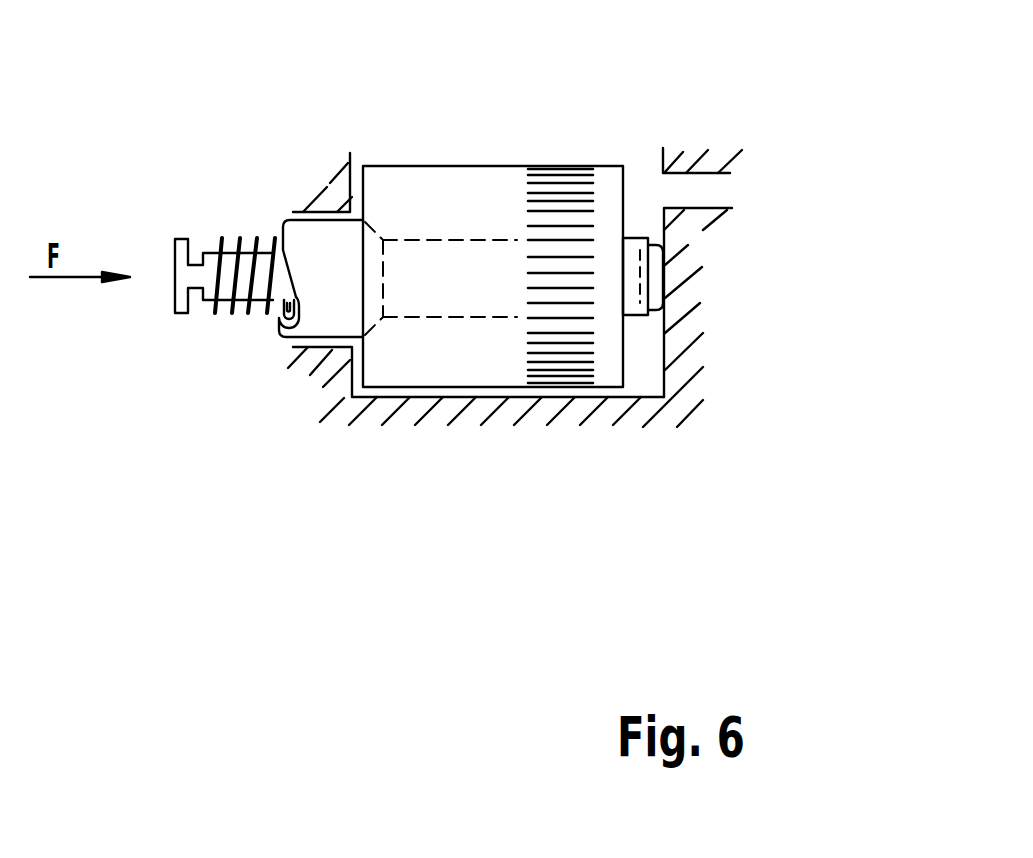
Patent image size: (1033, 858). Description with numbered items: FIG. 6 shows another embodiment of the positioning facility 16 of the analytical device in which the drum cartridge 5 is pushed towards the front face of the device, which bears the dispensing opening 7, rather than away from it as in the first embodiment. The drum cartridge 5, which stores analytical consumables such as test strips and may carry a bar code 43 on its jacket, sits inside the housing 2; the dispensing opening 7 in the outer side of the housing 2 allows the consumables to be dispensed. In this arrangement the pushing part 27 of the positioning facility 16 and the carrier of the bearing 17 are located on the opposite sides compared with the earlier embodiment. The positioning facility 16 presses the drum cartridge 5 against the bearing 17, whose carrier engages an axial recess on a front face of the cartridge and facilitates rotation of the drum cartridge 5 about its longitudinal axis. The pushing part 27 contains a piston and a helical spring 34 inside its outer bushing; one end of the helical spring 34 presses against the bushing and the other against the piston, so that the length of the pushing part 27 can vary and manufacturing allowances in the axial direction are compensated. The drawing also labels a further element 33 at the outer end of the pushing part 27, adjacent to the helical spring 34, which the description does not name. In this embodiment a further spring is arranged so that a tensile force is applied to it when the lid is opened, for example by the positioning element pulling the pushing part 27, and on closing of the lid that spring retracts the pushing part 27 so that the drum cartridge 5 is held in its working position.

The housing 2 is at (683, 368).
The drum cartridge 5 is at (440, 188).
The dispensing opening 7 is at (708, 197).
The positioning facility 16 is at (210, 261).
The bearing 17 is at (660, 283).
The pushing part 27 is at (327, 320).
The plunger pin 33 is at (210, 289).
The helical spring 34 is at (217, 242).
The bar code 43 is at (557, 172).